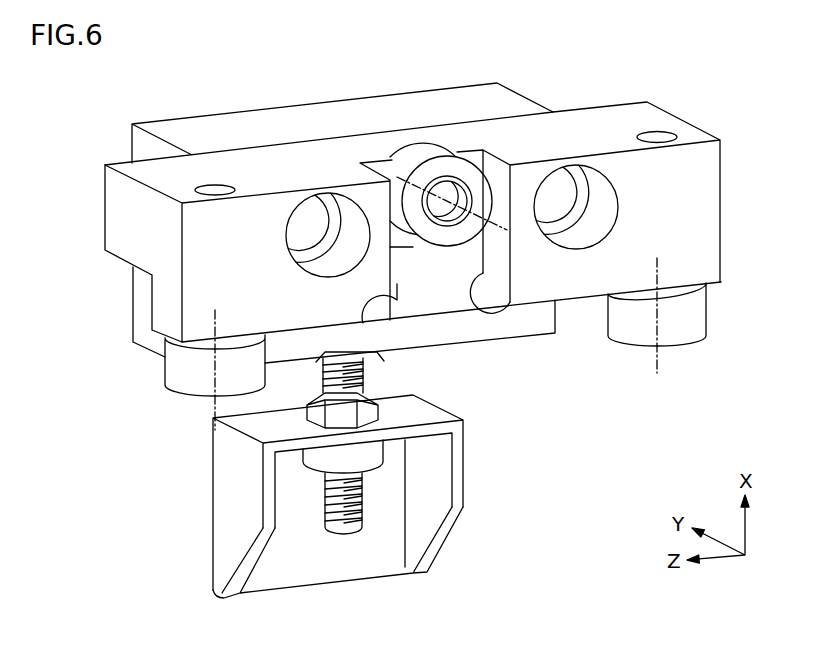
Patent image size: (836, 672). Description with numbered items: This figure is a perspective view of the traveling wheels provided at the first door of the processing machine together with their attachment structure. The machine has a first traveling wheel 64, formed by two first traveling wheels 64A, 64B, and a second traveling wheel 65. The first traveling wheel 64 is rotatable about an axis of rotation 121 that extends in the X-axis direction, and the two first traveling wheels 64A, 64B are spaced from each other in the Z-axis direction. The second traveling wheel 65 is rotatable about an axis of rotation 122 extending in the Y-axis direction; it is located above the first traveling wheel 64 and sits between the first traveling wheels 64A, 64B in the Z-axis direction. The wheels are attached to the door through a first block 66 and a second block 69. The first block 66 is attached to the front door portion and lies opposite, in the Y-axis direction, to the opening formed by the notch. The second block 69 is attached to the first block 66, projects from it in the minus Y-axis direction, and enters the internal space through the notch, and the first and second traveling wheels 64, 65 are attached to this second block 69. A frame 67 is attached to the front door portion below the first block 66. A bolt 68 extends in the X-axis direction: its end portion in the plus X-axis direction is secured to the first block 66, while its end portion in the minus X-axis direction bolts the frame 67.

The first block 66 is at (229, 128).
The second traveling wheel 65 is at (421, 150).
The axis of rotation 122 is at (497, 235).
The second block 69 is at (648, 122).
The first traveling wheel 64 is at (406, 341).
The first traveling wheel 64A is at (176, 375).
The first traveling wheel 64B is at (692, 328).
The axis of rotation 121 is at (212, 410).
The bolt 68 is at (363, 373).
The frame 67 is at (463, 473).